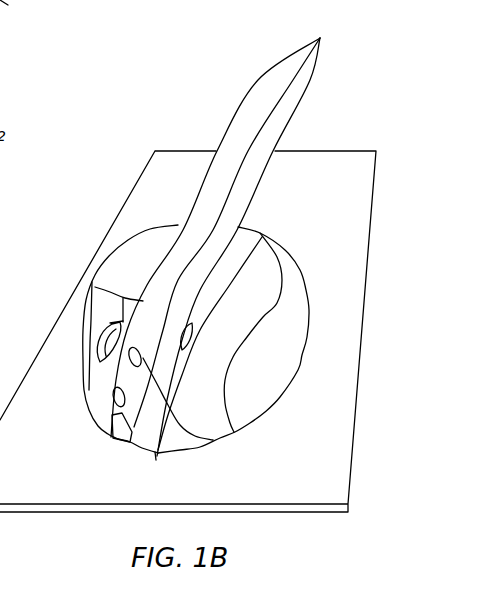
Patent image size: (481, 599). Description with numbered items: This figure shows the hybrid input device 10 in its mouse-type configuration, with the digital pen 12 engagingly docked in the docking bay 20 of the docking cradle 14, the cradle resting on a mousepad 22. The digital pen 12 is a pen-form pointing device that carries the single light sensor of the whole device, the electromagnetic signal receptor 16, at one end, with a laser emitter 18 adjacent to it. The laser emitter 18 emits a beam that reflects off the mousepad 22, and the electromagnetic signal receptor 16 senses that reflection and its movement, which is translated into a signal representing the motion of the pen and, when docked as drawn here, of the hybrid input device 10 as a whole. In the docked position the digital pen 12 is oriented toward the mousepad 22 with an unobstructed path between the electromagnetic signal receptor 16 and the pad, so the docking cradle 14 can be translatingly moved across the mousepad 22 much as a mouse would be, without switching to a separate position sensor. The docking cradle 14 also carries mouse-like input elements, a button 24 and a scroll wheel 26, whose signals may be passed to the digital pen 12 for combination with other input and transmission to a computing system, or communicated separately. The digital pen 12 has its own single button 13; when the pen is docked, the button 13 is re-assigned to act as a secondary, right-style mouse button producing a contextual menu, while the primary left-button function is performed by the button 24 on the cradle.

The hybrid input device 10 is at (196, 251).
The digital pen 12 is at (252, 88).
The button 13 is at (143, 354).
The docking cradle 14 is at (128, 232).
The electromagnetic signal receptor 16 is at (115, 440).
The laser emitter 18 is at (111, 418).
The docking bay 20 is at (209, 441).
The mousepad 22 is at (146, 160).
The button 24 is at (84, 390).
The scroll wheel 26 is at (90, 344).